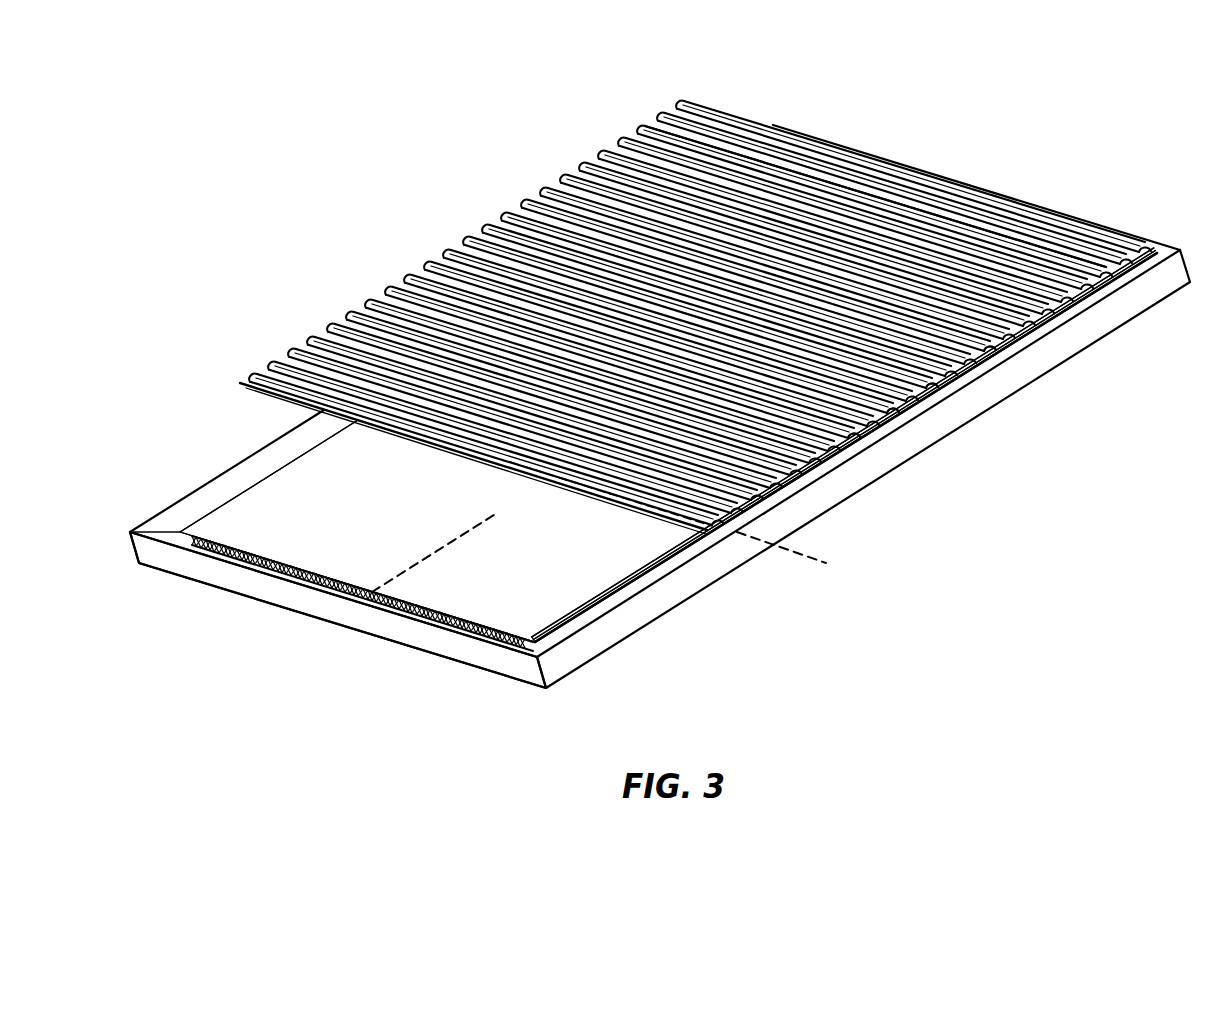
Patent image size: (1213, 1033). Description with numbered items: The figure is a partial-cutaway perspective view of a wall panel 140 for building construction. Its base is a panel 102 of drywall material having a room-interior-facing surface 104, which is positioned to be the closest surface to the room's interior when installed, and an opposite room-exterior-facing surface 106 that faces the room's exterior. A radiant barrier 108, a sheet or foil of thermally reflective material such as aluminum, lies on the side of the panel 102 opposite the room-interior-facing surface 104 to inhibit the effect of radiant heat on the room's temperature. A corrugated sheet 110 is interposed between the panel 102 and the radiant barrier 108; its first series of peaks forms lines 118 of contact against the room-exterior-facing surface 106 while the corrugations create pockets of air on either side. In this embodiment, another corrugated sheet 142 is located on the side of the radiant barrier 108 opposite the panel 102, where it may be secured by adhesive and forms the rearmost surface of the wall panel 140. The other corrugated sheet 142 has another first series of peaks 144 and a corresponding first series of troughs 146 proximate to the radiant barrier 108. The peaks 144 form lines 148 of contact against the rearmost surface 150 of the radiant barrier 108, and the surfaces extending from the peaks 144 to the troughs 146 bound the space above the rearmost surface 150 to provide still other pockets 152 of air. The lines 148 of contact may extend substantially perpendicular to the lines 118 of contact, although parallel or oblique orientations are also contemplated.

The panel of drywall material 102 is at (627, 622).
The room-interior-facing surface 104 is at (155, 569).
The room-exterior-facing surface 106 is at (159, 528).
The radiant barrier 108 is at (263, 503).
The corrugated sheet 110 is at (348, 592).
The lines of contact 118 is at (427, 562).
The wall panel 140 is at (391, 164).
The other corrugated sheet 142 is at (1012, 240).
The other first series of peaks 144 is at (937, 403).
The other first series of troughs 146 is at (1002, 360).
The lines of contact 148 is at (820, 568).
The rearmost surface of the radiant barrier 150 is at (538, 608).
The pockets of air 152 is at (881, 430).